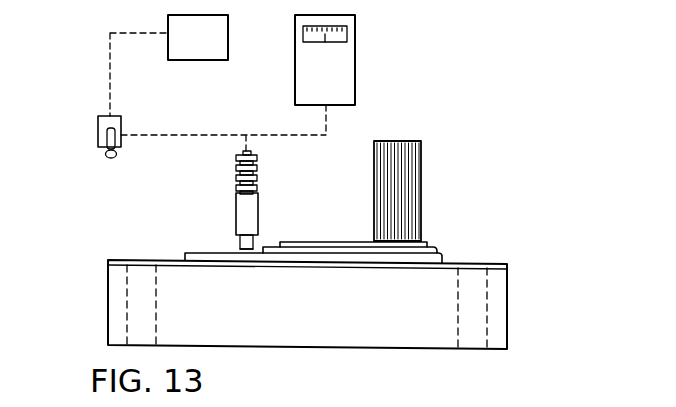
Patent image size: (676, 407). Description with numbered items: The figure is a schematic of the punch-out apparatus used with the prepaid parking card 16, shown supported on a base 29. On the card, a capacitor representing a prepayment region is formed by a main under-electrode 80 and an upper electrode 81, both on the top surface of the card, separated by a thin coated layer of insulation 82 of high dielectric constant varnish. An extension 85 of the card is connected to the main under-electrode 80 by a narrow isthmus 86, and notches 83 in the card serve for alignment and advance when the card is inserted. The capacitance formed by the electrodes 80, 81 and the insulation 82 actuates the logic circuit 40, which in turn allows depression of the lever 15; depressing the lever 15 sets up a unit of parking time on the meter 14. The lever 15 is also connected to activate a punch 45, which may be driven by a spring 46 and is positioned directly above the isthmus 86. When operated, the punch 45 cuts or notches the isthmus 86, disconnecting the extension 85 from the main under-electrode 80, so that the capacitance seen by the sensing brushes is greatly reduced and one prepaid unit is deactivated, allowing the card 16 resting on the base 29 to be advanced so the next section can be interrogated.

The meter 14 is at (345, 65).
The lever 15 is at (98, 131).
The parking card 16 is at (490, 263).
The base 29 is at (342, 334).
The logic circuit 40 is at (220, 50).
The punch 45 is at (240, 215).
The spring 46 is at (258, 179).
The main under-electrode 80 is at (325, 257).
The electrode 81 is at (320, 244).
The layer of insulation 82 is at (438, 254).
The notches 83 is at (522, 316).
The extension 85 is at (188, 252).
The isthmus 86 is at (255, 252).